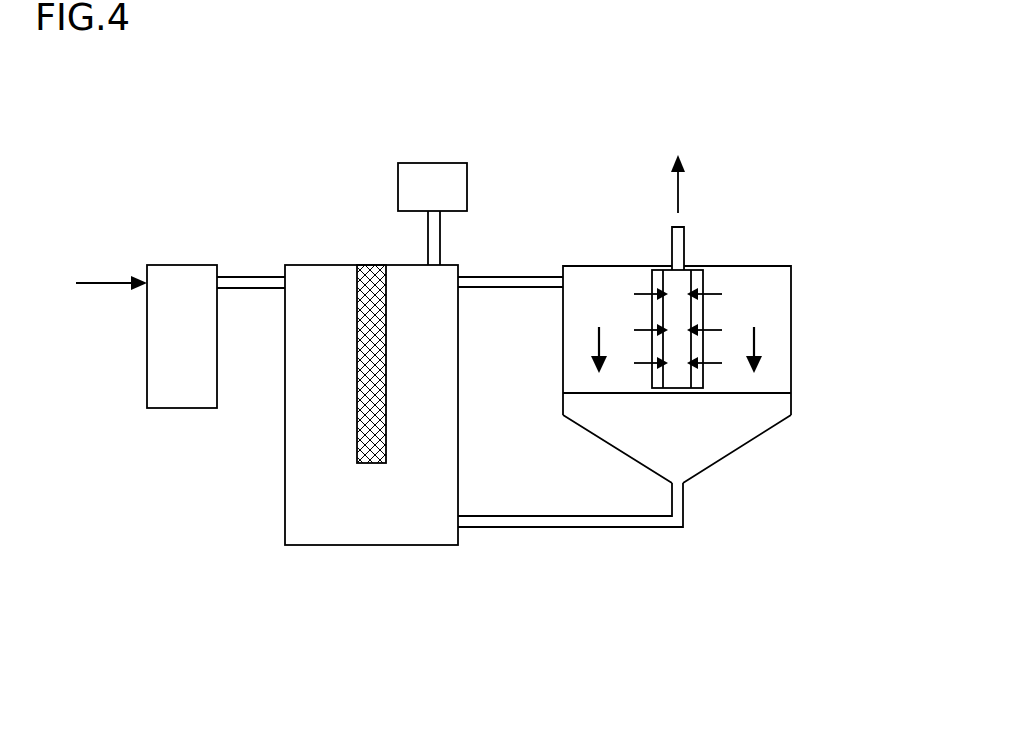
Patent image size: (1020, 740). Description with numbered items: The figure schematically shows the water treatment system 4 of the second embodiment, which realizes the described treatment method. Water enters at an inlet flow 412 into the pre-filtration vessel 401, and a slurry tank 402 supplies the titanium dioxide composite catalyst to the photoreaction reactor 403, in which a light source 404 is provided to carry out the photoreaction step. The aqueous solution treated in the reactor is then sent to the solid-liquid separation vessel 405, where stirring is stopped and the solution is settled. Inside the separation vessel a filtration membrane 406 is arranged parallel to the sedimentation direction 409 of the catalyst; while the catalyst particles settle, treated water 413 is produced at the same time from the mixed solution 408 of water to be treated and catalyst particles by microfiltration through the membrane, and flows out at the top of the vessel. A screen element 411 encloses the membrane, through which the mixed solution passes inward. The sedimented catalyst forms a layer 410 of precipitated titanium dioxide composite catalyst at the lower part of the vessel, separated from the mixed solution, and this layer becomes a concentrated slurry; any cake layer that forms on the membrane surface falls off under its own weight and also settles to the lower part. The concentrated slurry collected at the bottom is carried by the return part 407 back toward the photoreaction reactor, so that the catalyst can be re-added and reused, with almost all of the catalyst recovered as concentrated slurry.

The water treatment system 4 is at (705, 110).
The pre-filtration vessel 401 is at (178, 265).
The slurry tank 402 is at (431, 163).
The photoreaction reactor 403 is at (373, 545).
The light source 404 is at (357, 310).
The solid-liquid separation vessel 405 is at (595, 266).
The filtration membrane 406 is at (658, 312).
The return part 407 is at (576, 529).
The mixed solution 408 is at (773, 337).
The sedimentation direction 409 is at (592, 348).
The layer of precipitated titanium dioxide composite catalyst 410 is at (710, 433).
The screen 411 is at (708, 294).
The inlet flow 412 is at (98, 283).
The treated water 413 is at (678, 190).